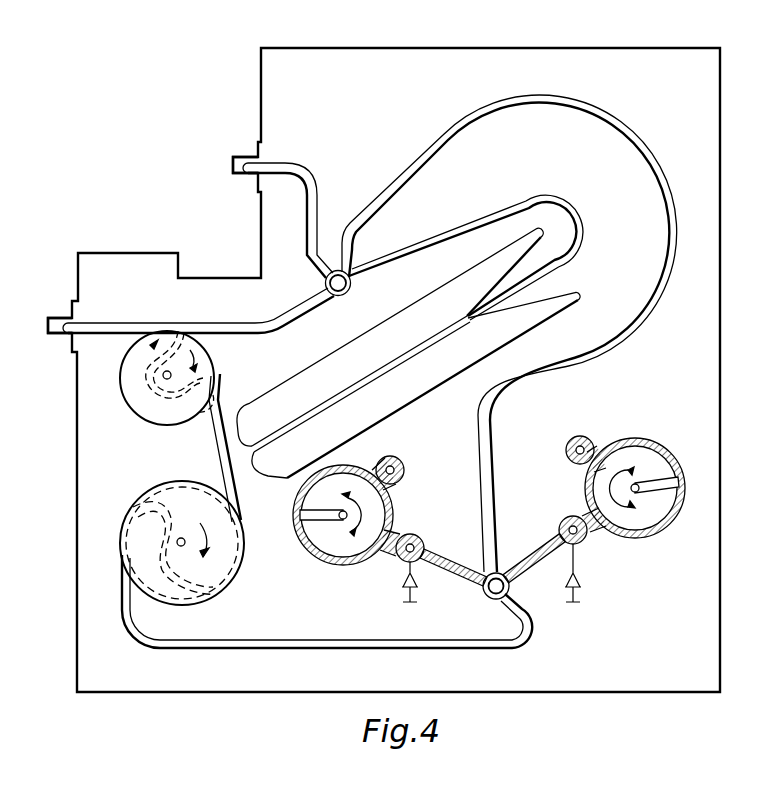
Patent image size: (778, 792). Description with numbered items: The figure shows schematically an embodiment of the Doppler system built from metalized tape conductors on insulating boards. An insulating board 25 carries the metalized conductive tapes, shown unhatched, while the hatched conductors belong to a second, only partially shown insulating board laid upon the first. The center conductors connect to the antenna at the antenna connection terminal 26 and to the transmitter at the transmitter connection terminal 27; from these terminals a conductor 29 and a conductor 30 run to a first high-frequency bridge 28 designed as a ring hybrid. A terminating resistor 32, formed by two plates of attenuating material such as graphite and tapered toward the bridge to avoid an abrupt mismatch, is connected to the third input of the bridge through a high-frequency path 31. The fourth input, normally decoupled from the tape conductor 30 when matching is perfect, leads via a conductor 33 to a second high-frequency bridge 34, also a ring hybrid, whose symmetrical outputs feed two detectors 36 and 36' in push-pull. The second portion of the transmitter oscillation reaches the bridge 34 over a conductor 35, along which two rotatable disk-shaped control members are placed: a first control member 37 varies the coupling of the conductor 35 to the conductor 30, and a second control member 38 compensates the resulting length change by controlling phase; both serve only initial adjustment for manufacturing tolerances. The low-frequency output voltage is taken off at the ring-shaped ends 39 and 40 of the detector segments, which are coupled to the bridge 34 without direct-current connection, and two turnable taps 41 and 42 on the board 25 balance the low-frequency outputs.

The insulating board 25 is at (596, 62).
The antenna connection terminal 26 is at (227, 163).
The transmitter connection terminal 27 is at (56, 315).
The first high-frequency bridge 28 is at (348, 285).
The conductor 29 is at (307, 168).
The conductor 30 is at (118, 326).
The high-frequency path 31 is at (517, 202).
The terminating resistor 32 is at (435, 377).
The conductor 33 is at (652, 317).
The second high-frequency bridge 34 is at (491, 594).
The conductor 35 is at (148, 633).
The detector 36 is at (427, 570).
The detector 36' is at (558, 561).
The first control member 37 is at (142, 410).
The second control member 38 is at (172, 487).
The ring-shaped end 39 is at (391, 456).
The ring-shaped end 40 is at (583, 436).
The turnable tap 41 is at (375, 486).
The turnable tap 42 is at (603, 470).